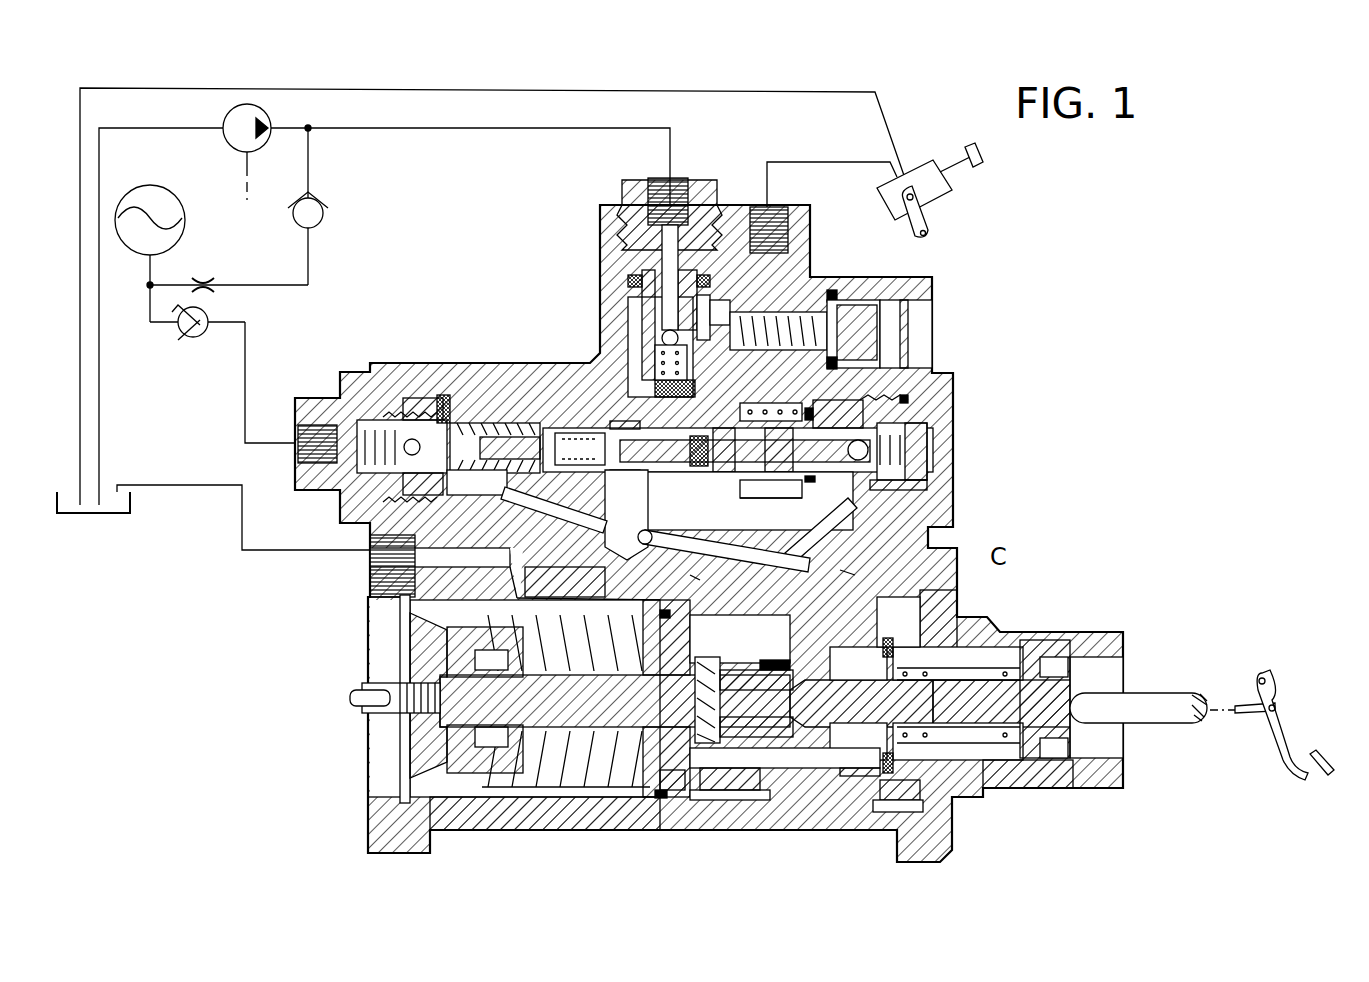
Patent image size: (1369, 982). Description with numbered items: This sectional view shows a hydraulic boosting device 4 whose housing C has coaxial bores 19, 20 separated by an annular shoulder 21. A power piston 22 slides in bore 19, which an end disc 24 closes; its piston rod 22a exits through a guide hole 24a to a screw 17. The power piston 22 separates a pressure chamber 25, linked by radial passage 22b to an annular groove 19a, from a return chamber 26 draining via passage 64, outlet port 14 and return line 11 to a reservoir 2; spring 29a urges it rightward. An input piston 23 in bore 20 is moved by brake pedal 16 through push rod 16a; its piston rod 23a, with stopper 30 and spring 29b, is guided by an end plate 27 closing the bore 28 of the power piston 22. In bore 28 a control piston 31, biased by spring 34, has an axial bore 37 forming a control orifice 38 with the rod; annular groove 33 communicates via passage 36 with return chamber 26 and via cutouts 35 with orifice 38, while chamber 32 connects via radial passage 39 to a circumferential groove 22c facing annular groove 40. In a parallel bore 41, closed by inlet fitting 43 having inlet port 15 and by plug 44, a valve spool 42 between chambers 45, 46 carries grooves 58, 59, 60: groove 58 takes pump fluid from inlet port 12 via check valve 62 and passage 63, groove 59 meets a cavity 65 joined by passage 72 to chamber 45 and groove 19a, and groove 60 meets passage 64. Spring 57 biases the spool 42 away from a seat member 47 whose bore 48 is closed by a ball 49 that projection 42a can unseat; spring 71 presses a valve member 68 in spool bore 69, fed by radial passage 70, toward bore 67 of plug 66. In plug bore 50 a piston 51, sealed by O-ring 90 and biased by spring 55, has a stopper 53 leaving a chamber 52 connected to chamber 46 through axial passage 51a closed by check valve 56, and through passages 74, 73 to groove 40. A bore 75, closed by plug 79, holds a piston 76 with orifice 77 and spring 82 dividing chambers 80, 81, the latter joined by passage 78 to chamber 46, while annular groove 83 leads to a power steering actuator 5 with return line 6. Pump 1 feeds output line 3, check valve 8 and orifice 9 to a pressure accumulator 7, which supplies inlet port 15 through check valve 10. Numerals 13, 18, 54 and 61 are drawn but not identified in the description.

The pump 1 is at (247, 152).
The reservoir 2 is at (105, 515).
The conduit 3 is at (410, 128).
The valve housing 4 is at (988, 618).
The switch 5 is at (925, 170).
The electric line 6 is at (810, 92).
The motor 7 is at (160, 185).
The check valve 8 is at (293, 218).
The orifice 9 is at (205, 275).
The check valve 10 is at (200, 338).
The return conduit 11 is at (193, 485).
The solenoid 12 is at (657, 182).
The solenoid coil 13 is at (762, 207).
The solenoid coil 14 is at (370, 575).
The solenoid valve 15 is at (316, 425).
The pedal 16 is at (1290, 722).
The push rod 16a is at (1170, 700).
The adjusting screw 17 is at (355, 690).
The end cap 18 is at (1028, 640).
The housing bottom 19 is at (612, 800).
The housing recess 19a is at (890, 812).
The bushing 20 is at (1052, 765).
The passage 21 is at (938, 795).
The seal 22 is at (655, 780).
The seal groove 22a is at (482, 714).
The wall 22b is at (915, 600).
The sleeve 22c is at (750, 672).
The guide 23 is at (1100, 745).
The chamber 23a is at (912, 690).
The end plate 24 is at (408, 745).
The piston cup 24a is at (466, 695).
The spring 25 is at (990, 668).
The spring 26 is at (542, 790).
The port 27 is at (858, 775).
The passage 28 is at (755, 768).
The seat 29a is at (580, 795).
The spring 29b is at (1000, 760).
The chamber 30 is at (951, 720).
The partition 31 is at (680, 702).
The passage 32 is at (738, 798).
The spool 33 is at (815, 680).
The piston rod 34 is at (700, 722).
The passage 35 is at (812, 768).
The passage 36 is at (692, 790).
The spring 37 is at (725, 657).
The seal 38 is at (778, 660).
The seal 39 is at (688, 650).
The passage 40 is at (682, 577).
The piston 41 is at (548, 428).
The spool 42 is at (488, 420).
The spool land 42a is at (428, 398).
The thread 43 is at (400, 380).
The plug 44 is at (935, 410).
The seal 45 is at (447, 383).
The spring seat 46 is at (778, 505).
The thread 47 is at (398, 482).
The chamber 48 is at (469, 500).
The spring 49 is at (410, 437).
The thread 50 is at (925, 390).
The sleeve 51 is at (928, 484).
The seal 51a is at (822, 478).
The plug 52 is at (928, 468).
The spring 53 is at (785, 490).
The chamber 54 is at (728, 495).
The sleeve 55 is at (840, 391).
The ball 56 is at (870, 448).
The chamber 57 is at (468, 405).
The chamber 58 is at (672, 480).
The sleeve 59 is at (622, 421).
The valve body 60 is at (612, 362).
The fitting 61 is at (635, 205).
The ball 62 is at (664, 333).
The plunger 63 is at (662, 270).
The housing block 64 is at (540, 562).
The chamber 65 is at (644, 512).
The spring 66 is at (772, 403).
The spool 67 is at (718, 468).
The seal 68 is at (698, 436).
The spring 69 is at (496, 447).
The passage 70 is at (560, 516).
The piston 71 is at (580, 433).
The passage 72 is at (634, 555).
The passage 73 is at (863, 560).
The spring 74 is at (905, 462).
The chamber 75 is at (808, 312).
The spring 76 is at (772, 316).
The passage 77 is at (710, 312).
The seal 78 is at (830, 343).
The plug 79 is at (915, 345).
The seal 80 is at (703, 265).
The seal 81 is at (832, 305).
The piston 82 is at (822, 328).
The passage 83 is at (740, 302).
The passage 90 is at (832, 535).